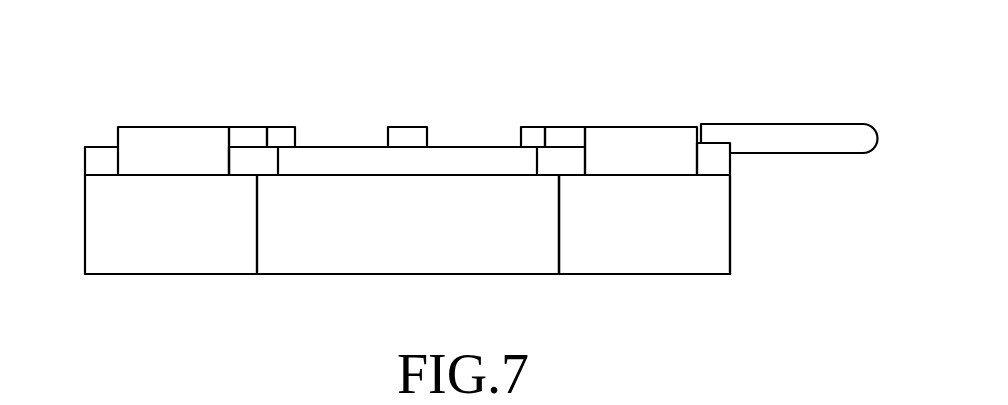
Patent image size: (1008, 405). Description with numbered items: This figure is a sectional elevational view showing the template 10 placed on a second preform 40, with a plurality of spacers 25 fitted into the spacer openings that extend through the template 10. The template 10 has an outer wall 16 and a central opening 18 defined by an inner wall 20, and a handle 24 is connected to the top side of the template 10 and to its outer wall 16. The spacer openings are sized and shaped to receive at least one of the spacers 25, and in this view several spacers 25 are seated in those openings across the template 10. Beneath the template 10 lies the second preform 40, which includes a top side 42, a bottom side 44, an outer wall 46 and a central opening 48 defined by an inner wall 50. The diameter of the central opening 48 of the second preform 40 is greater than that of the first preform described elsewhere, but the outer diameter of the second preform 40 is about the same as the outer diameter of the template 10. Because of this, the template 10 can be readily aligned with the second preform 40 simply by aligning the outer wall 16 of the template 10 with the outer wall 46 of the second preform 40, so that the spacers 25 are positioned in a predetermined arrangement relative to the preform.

The template 10 is at (102, 147).
The outer wall 16 is at (732, 163).
The central opening 18 is at (480, 157).
The inner wall 20 is at (279, 160).
The handle 24 is at (798, 124).
The spacers 25 is at (152, 127).
The second preform 40 is at (682, 255).
The top side 42 is at (707, 175).
The bottom side 44 is at (618, 275).
The outer wall 46 is at (730, 250).
The central opening 48 is at (363, 245).
The inner wall 50 is at (552, 250).